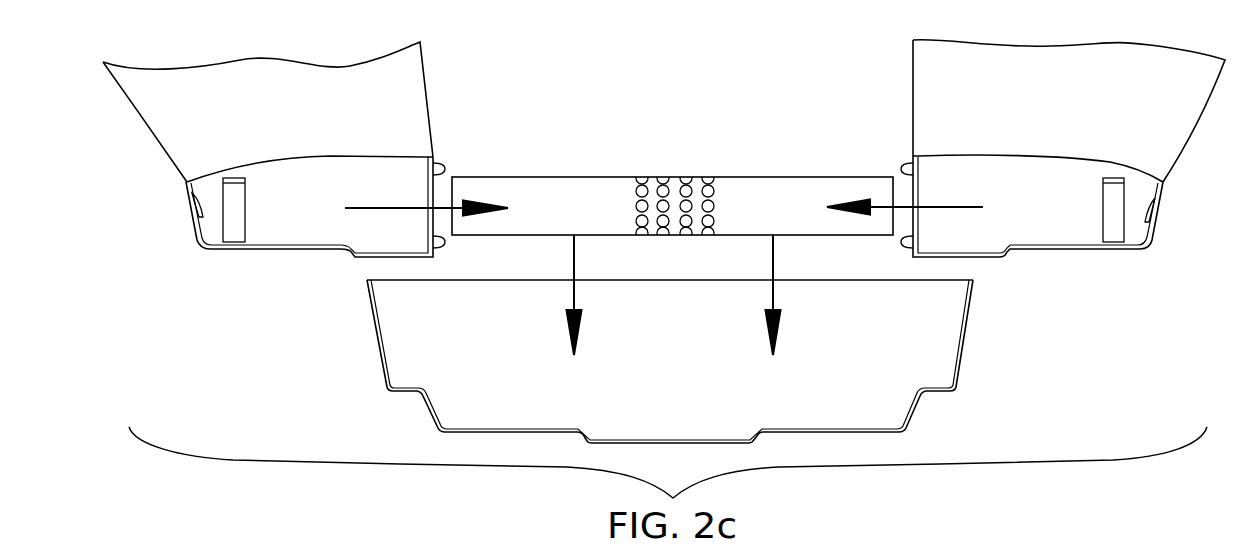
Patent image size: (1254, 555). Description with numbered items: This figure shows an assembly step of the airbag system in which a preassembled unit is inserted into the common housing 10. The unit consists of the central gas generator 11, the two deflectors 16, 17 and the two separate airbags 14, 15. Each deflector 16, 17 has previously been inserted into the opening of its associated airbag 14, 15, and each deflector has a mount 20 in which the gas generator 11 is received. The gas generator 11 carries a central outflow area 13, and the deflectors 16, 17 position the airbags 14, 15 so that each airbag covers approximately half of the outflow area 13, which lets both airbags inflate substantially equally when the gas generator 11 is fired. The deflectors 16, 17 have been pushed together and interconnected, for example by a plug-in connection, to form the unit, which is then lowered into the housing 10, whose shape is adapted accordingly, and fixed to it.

The common housing 10 is at (967, 333).
The gas generator 11 is at (798, 192).
The outflow area 13 is at (687, 178).
The airbag 14 is at (400, 105).
The airbag 15 is at (933, 95).
The deflector 16 is at (307, 248).
The deflector 17 is at (1033, 220).
The mount 20 is at (223, 208).